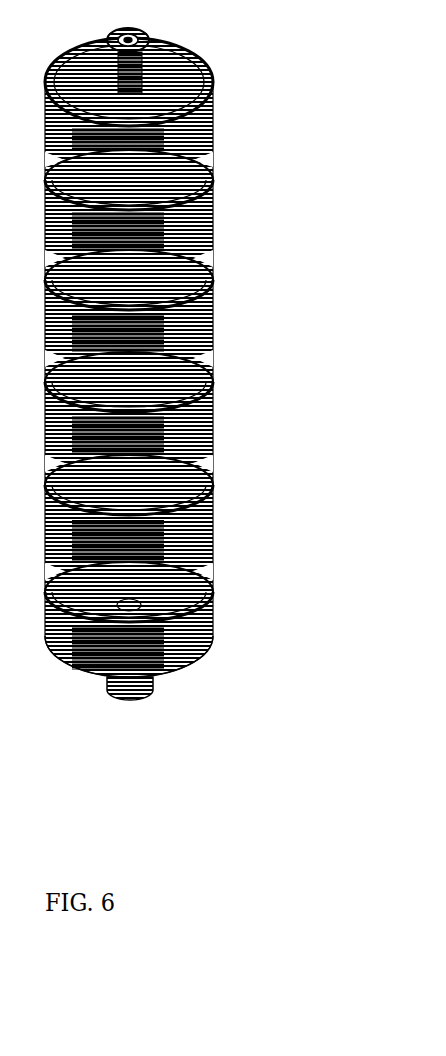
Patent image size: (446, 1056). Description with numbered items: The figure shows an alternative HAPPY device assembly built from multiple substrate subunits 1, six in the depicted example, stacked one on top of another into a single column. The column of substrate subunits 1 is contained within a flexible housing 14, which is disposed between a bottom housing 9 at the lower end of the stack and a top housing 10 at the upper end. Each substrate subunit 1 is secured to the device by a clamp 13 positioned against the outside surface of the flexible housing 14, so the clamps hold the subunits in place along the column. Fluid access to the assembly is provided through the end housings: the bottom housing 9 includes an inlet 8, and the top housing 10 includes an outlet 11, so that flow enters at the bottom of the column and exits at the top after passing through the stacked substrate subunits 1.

The substrate subunit 1 is at (197, 357).
The inlet 8 is at (228, 697).
The bottom housing 9 is at (197, 596).
The top housing 10 is at (197, 98).
The outlet 11 is at (228, 46).
The clamp 13 is at (195, 327).
The flexible housing 14 is at (195, 210).